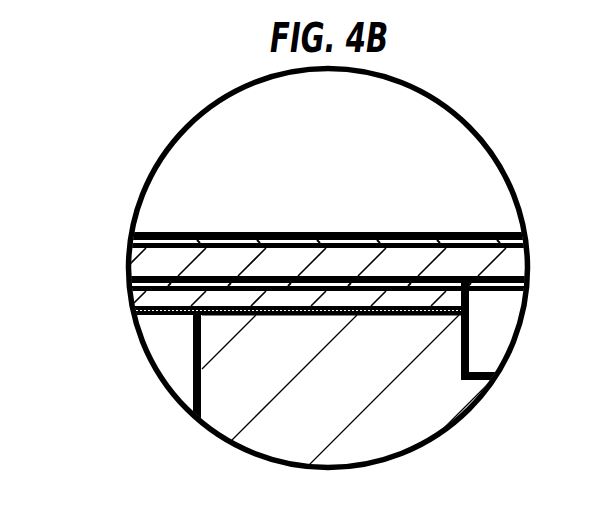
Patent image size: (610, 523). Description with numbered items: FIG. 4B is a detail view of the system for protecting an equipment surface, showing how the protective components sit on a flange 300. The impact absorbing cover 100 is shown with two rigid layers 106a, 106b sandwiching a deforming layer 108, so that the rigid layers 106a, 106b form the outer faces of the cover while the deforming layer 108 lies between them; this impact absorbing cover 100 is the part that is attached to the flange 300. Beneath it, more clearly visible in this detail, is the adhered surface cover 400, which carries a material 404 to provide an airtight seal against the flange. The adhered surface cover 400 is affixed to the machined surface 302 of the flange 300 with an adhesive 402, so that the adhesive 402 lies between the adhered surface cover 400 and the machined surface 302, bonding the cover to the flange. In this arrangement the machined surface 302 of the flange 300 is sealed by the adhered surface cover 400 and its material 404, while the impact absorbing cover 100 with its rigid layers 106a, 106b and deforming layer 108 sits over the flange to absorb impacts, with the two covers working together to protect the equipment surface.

The impact absorbing cover 100 is at (130, 286).
The rigid layer 106a is at (503, 233).
The deforming layer 108 is at (513, 263).
The rigid layer 106b is at (507, 292).
The adhered surface cover 400 is at (130, 315).
The material 404 is at (470, 297).
The adhesive 402 is at (470, 310).
The flange 300 is at (192, 393).
The machined surface 302 is at (311, 308).